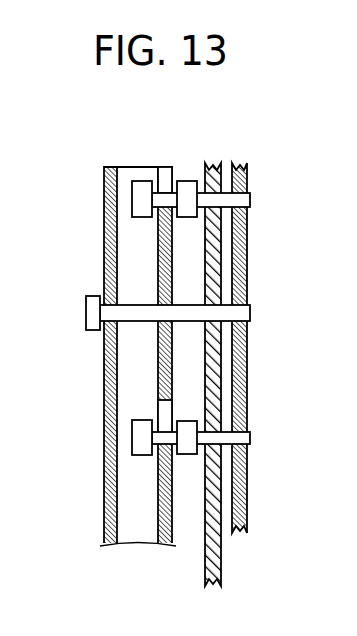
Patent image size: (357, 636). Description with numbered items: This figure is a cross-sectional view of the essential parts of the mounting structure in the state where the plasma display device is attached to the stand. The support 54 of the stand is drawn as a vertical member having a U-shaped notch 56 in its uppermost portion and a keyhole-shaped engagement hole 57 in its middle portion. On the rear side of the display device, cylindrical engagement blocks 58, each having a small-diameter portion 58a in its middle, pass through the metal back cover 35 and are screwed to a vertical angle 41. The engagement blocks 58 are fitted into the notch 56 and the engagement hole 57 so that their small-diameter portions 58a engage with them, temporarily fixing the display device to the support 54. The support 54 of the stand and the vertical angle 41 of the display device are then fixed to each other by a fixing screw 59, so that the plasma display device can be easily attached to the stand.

The back cover 35 is at (222, 562).
The vertical angle 41 is at (247, 490).
The support 54 is at (105, 198).
The U-shaped notch 56 is at (168, 177).
The keyhole-shaped engagement hole 57 is at (165, 412).
The engagement block 58 is at (142, 192).
The small-diameter portion 58a is at (168, 198).
The fixing screw 59 is at (94, 315).